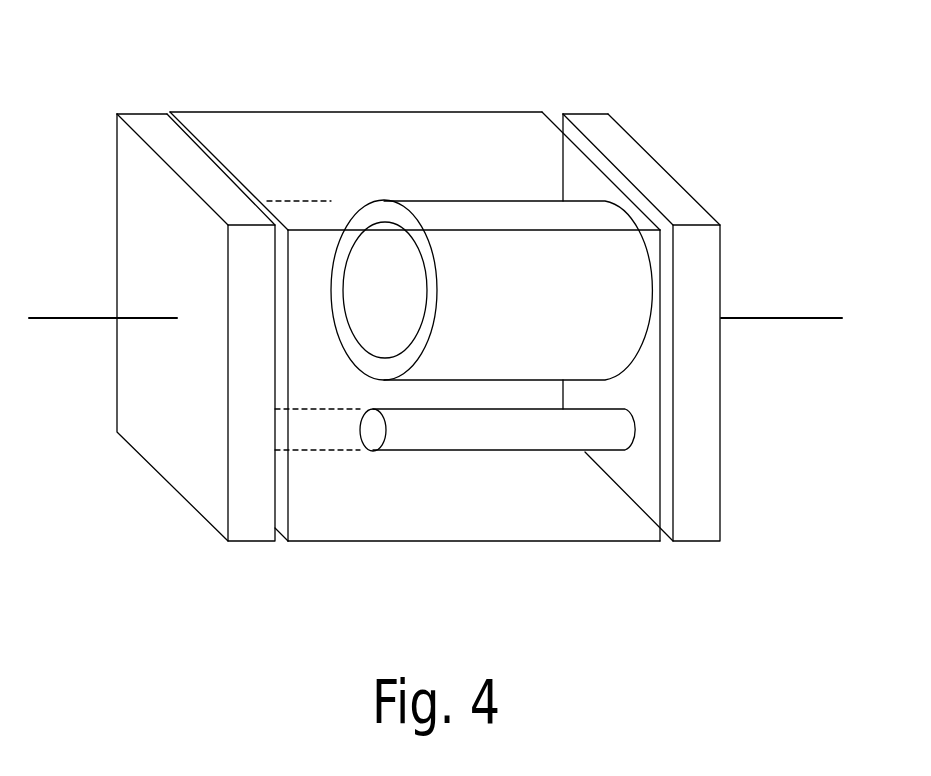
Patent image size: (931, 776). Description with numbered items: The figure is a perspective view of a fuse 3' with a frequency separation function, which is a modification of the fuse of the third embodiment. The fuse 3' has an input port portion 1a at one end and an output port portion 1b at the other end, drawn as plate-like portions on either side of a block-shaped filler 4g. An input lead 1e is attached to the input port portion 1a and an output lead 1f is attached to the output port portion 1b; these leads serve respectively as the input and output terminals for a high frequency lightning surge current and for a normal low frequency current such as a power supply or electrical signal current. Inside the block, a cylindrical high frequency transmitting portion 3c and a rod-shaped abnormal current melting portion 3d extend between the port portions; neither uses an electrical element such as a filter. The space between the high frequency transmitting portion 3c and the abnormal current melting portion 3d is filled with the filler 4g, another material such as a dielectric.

The fuse with a frequency separation function 3' is at (416, 307).
The filler 4g is at (372, 523).
The input port portion 1a is at (139, 112).
The output port portion 1b is at (666, 170).
The input lead 1e is at (68, 316).
The output lead 1f is at (793, 316).
The high frequency transmitting portion 3c is at (481, 203).
The abnormal current melting portion 3d is at (517, 453).